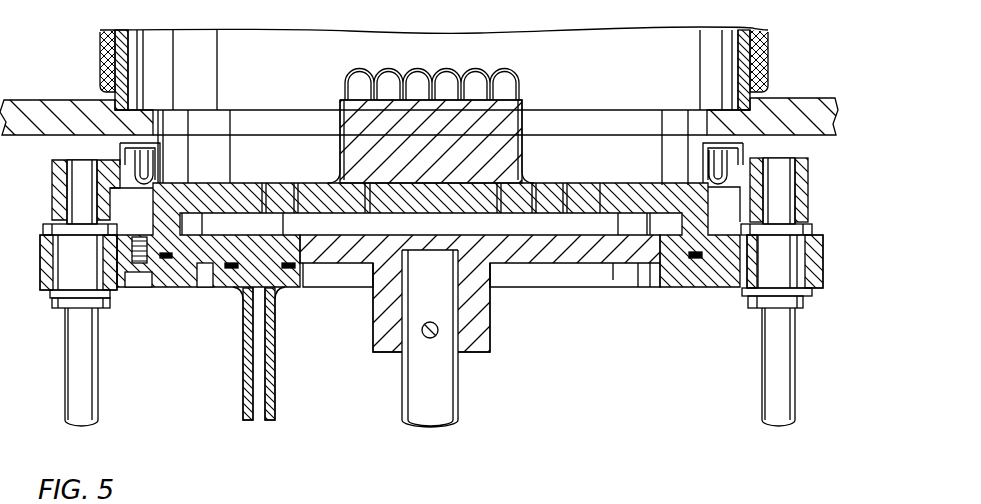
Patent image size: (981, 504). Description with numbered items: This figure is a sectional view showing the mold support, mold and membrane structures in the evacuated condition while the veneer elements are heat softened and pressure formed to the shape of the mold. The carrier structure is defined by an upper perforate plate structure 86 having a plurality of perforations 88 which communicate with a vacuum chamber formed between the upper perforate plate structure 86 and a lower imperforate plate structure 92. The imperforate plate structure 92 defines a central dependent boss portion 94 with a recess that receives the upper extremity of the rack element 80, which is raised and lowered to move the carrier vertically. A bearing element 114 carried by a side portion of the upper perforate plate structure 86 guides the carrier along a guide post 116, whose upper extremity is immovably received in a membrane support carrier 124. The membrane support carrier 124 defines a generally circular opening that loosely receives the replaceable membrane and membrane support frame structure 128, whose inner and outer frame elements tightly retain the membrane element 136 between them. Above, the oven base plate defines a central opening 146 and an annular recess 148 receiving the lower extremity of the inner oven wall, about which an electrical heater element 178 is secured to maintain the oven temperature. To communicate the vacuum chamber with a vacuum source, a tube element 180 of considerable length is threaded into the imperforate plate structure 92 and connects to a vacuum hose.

The rack element 80 is at (453, 400).
The upper perforate plate structure 86 is at (237, 198).
The perforations 88 is at (295, 183).
The lower imperforate plate structure 92 is at (612, 250).
The central dependent boss portion 94 is at (482, 330).
The bearing element 114 is at (793, 268).
The guide post 116 is at (93, 390).
The membrane support carrier 124 is at (800, 158).
The membrane and membrane support frame structure 128 is at (621, 503).
The membrane element 136 is at (523, 153).
The central opening 146 is at (702, 122).
The annular recess 148 is at (147, 115).
The electrical heater element 178 is at (768, 63).
The tube element 180 is at (273, 374).